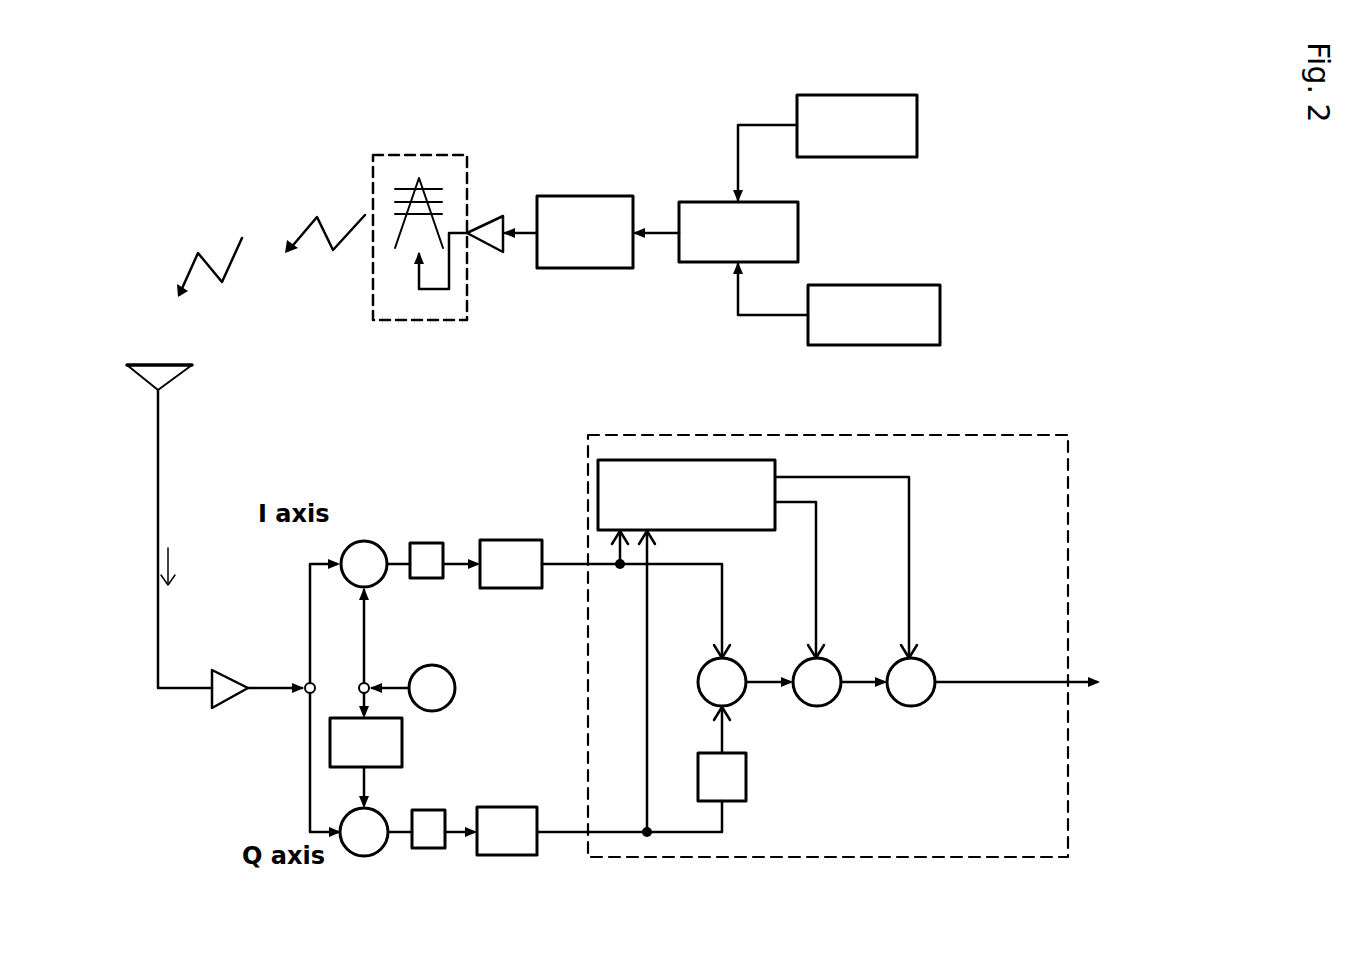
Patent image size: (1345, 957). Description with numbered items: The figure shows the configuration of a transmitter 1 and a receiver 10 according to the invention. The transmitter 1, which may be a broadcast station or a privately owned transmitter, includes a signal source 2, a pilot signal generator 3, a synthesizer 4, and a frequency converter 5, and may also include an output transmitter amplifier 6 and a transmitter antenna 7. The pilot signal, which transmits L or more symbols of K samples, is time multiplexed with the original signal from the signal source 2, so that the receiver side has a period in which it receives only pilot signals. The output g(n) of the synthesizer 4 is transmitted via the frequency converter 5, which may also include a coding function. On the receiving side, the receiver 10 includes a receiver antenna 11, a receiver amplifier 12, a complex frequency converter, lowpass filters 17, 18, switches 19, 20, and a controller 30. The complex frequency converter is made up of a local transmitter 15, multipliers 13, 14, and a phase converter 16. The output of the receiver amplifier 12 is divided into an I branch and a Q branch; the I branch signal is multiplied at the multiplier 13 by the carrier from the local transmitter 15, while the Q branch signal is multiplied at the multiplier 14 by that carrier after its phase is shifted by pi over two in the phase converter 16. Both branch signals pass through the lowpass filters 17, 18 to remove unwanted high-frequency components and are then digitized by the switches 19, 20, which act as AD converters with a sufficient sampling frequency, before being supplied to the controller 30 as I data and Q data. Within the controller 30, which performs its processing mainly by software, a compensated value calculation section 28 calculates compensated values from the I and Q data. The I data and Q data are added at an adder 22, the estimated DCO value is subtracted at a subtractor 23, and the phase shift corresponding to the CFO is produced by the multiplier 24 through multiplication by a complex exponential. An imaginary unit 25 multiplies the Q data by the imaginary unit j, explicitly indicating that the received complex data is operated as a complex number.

The transmitter 1 is at (1010, 96).
The signal source 2 is at (850, 95).
The pilot signal generator 3 is at (862, 285).
The synthesizer 4 is at (778, 202).
The frequency converter 5 is at (590, 196).
The transmitter amplifier 6 is at (493, 220).
The transmitter antenna 7 is at (403, 153).
The receiver 10 is at (1154, 426).
The receiver antenna 11 is at (170, 382).
The receiver amplifier 12 is at (238, 680).
The multiplier 13 is at (360, 541).
The multiplier 14 is at (368, 857).
The local transmitter 15 is at (450, 668).
The phase converter 16 is at (403, 744).
The lowpass filter 17 is at (425, 543).
The lowpass filter 18 is at (423, 810).
The switch 19 is at (508, 540).
The switch 20 is at (512, 807).
The adder 22 is at (738, 703).
The subtractor 23 is at (824, 707).
The multiplier 24 is at (906, 707).
The imaginary unit 25 is at (746, 785).
The compensated value calculation section 28 is at (822, 559).
The controller 30 is at (1068, 529).